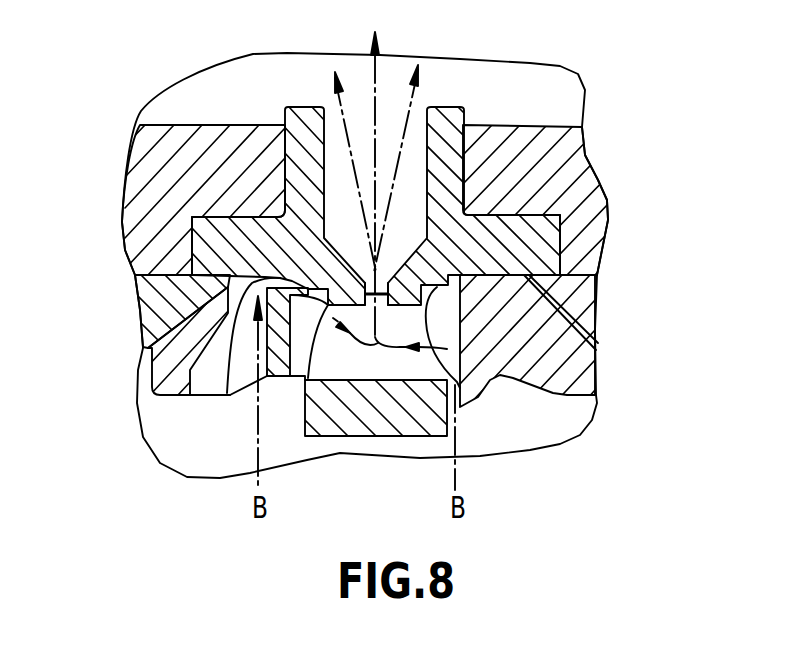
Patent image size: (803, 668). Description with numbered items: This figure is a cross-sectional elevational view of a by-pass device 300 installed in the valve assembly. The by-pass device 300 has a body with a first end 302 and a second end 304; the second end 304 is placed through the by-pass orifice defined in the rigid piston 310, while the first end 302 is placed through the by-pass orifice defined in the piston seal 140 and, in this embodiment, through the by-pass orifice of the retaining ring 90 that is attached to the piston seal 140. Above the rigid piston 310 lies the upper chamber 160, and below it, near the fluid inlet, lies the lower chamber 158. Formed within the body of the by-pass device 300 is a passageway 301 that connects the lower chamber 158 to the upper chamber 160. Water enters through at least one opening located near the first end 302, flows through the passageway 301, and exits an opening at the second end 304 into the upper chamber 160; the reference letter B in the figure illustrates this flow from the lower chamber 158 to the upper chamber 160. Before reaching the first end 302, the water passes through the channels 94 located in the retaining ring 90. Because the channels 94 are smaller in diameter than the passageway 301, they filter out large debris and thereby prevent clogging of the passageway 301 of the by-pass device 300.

The upper chamber 160 is at (533, 100).
The rigid piston 310 is at (565, 178).
The second end 304 is at (303, 118).
The by-pass device 300 is at (458, 90).
The passageway 301 is at (348, 280).
The piston seal 140 is at (597, 290).
The retaining ring 90 is at (527, 347).
The lower chamber 158 is at (165, 420).
The channels 94 is at (232, 396).
The first end 302 is at (384, 430).